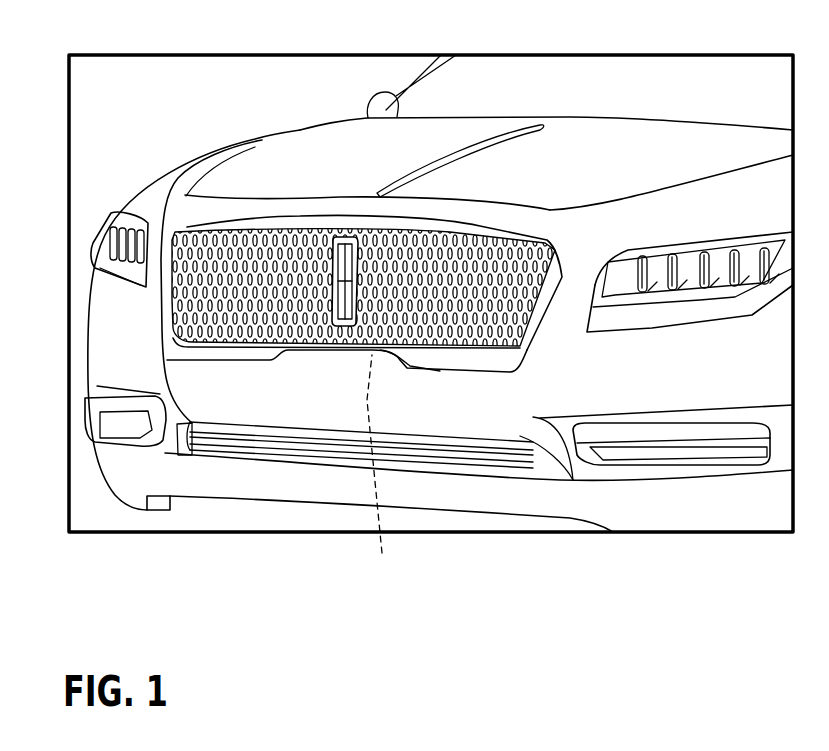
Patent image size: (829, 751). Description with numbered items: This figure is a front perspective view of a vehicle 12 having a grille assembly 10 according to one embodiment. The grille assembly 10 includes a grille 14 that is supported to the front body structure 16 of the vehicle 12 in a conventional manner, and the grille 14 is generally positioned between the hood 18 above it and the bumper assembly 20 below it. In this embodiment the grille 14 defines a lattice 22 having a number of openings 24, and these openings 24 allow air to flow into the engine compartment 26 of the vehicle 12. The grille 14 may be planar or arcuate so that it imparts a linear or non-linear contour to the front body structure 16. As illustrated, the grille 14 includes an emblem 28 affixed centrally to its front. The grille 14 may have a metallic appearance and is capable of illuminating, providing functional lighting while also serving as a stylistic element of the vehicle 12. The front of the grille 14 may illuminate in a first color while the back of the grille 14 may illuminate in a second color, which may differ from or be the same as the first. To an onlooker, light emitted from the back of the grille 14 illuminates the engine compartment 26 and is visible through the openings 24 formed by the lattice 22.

The grille assembly 10 is at (197, 225).
The vehicle 12 is at (334, 116).
The grille 14 is at (213, 339).
The front body structure 16 is at (167, 227).
The hood 18 is at (290, 180).
The bumper assembly 20 is at (243, 478).
The lattice 22 is at (200, 292).
The openings 24 is at (420, 312).
The engine compartment 26 is at (380, 466).
The emblem 28 is at (327, 322).